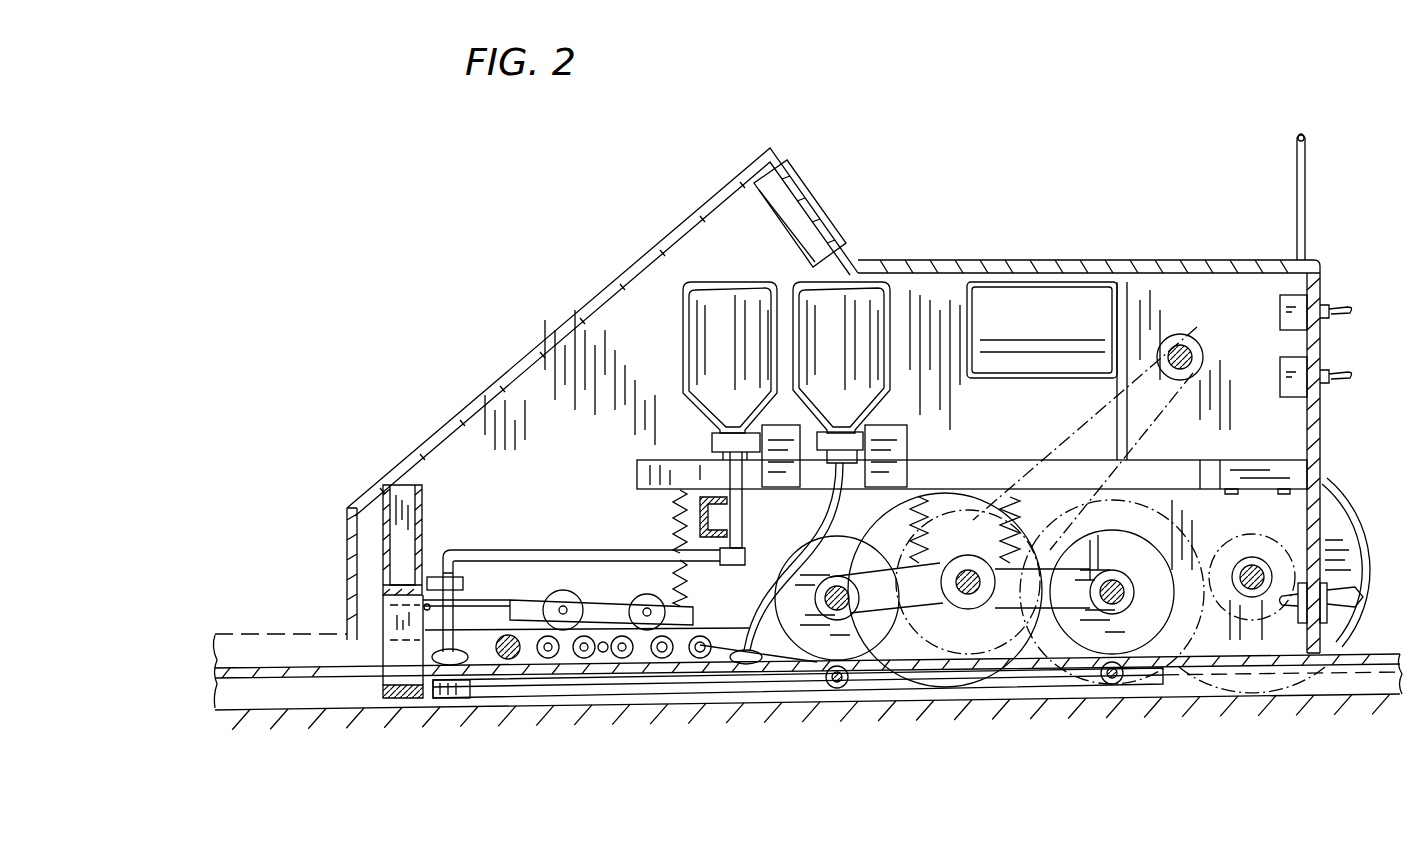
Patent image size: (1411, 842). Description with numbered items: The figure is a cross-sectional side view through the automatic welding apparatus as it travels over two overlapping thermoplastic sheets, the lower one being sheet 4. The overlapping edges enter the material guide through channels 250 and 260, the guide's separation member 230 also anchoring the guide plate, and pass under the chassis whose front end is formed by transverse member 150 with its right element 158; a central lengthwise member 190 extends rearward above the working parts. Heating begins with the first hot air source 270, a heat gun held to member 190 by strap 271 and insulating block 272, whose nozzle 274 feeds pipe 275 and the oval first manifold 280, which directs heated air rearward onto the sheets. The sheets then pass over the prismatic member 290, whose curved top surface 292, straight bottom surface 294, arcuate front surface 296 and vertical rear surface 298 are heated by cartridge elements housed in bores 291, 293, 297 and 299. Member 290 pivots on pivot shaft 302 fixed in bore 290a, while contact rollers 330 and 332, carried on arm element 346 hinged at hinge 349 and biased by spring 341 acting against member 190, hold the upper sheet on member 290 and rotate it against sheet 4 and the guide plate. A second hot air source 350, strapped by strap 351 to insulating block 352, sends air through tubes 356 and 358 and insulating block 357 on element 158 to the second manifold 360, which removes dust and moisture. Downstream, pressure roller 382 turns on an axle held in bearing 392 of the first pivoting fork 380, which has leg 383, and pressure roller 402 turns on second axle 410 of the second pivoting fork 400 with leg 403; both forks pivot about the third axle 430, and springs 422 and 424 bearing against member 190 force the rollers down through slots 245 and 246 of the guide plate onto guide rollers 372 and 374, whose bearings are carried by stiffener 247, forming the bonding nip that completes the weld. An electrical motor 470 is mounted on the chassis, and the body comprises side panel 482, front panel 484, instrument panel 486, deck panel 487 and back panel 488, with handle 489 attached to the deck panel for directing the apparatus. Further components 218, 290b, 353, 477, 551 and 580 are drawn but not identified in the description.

The thermoplastic sheet 4 is at (297, 677).
The transverse member 150 is at (372, 542).
The right element 158 is at (385, 580).
The central lengthwise member 190 is at (637, 482).
The incoming conveyor/web 218 is at (244, 659).
The separation member 230 is at (372, 662).
The slot 245 is at (885, 686).
The slot 246 is at (960, 686).
The stiffener 247 is at (1000, 683).
The channel 250 is at (395, 690).
The channel 260 is at (400, 620).
The first hot air source 270 is at (891, 360).
The strap 271 is at (872, 420).
The insulating block 272 is at (906, 435).
The nozzle 274 is at (907, 458).
The pipe 275 is at (786, 538).
The first manifold 280 is at (742, 666).
The prismatic member 290 is at (470, 698).
The bore 290a is at (508, 635).
The roller 290b is at (603, 653).
The bore 291 is at (549, 660).
The curved top surface 292 is at (620, 660).
The bore 293 is at (628, 656).
The straight bottom surface 294 is at (555, 697).
The arcuate front surface 296 is at (445, 690).
The bore 297 is at (672, 598).
The vertical rear surface 298 is at (740, 642).
The bore 299 is at (700, 660).
The pivot shaft 302 is at (505, 697).
The contact roller 330 is at (560, 592).
The contact roller 332 is at (638, 597).
The spring 341 is at (672, 522).
The arm element 346 is at (585, 610).
The hinge 349 is at (424, 607).
The second hot air source 350 is at (683, 326).
The strap 351 is at (712, 442).
The insulating block 352 is at (800, 417).
The valve stem 353 is at (742, 535).
The tube 356 is at (557, 550).
The insulating block 357 is at (440, 553).
The tube 358 is at (455, 577).
The second manifold 360 is at (496, 652).
The guide roller 372 is at (832, 688).
The guide roller 374 is at (1110, 685).
The first pivoting fork 380 is at (898, 548).
The pressure roller 382 is at (815, 662).
The leg 383 is at (915, 618).
The bearing 392 is at (825, 598).
The second pivoting fork 400 is at (1115, 540).
The pressure roller 402 is at (1138, 645).
The leg 403 is at (1010, 612).
The second axle 410 is at (1134, 592).
The spring 422 is at (928, 519).
The spring 424 is at (1020, 520).
The third axle 430 is at (966, 610).
The electrical motor 470 is at (1085, 290).
The crank hub 477 is at (1187, 345).
The side panel 482 is at (655, 244).
The front panel 484 is at (565, 322).
The instrument panel 486 is at (858, 266).
The deck panel 487 is at (1013, 262).
The back panel 488 is at (1320, 450).
The handle 489 is at (1296, 150).
The gear wheel 551 is at (1366, 608).
The control box 580 is at (786, 193).